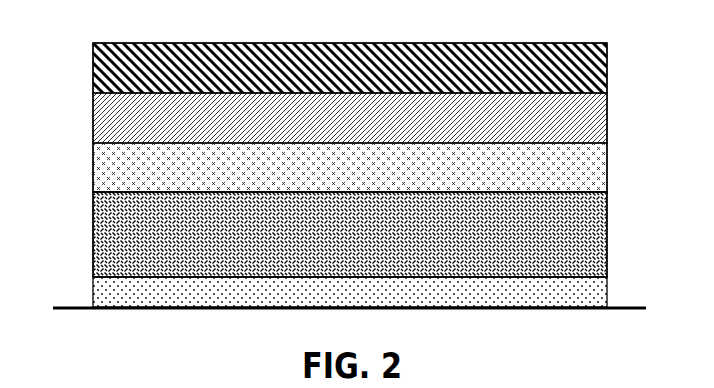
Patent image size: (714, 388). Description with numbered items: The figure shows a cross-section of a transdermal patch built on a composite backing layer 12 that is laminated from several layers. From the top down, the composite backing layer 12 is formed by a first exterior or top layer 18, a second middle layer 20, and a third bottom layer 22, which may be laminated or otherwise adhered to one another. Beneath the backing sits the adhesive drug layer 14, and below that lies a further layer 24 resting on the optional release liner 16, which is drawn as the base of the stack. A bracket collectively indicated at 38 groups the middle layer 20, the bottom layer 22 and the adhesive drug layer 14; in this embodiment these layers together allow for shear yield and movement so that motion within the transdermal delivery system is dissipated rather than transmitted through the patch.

The composite backing layer 12 is at (83, 43).
The adhesive drug layer 14 is at (83, 195).
The release liner 16 is at (487, 293).
The first exterior layer 18 is at (598, 78).
The second middle layer 20 is at (597, 124).
The third bottom layer 22 is at (597, 170).
The base layer 24 is at (617, 307).
The shear-yielding layer group 38 is at (615, 93).